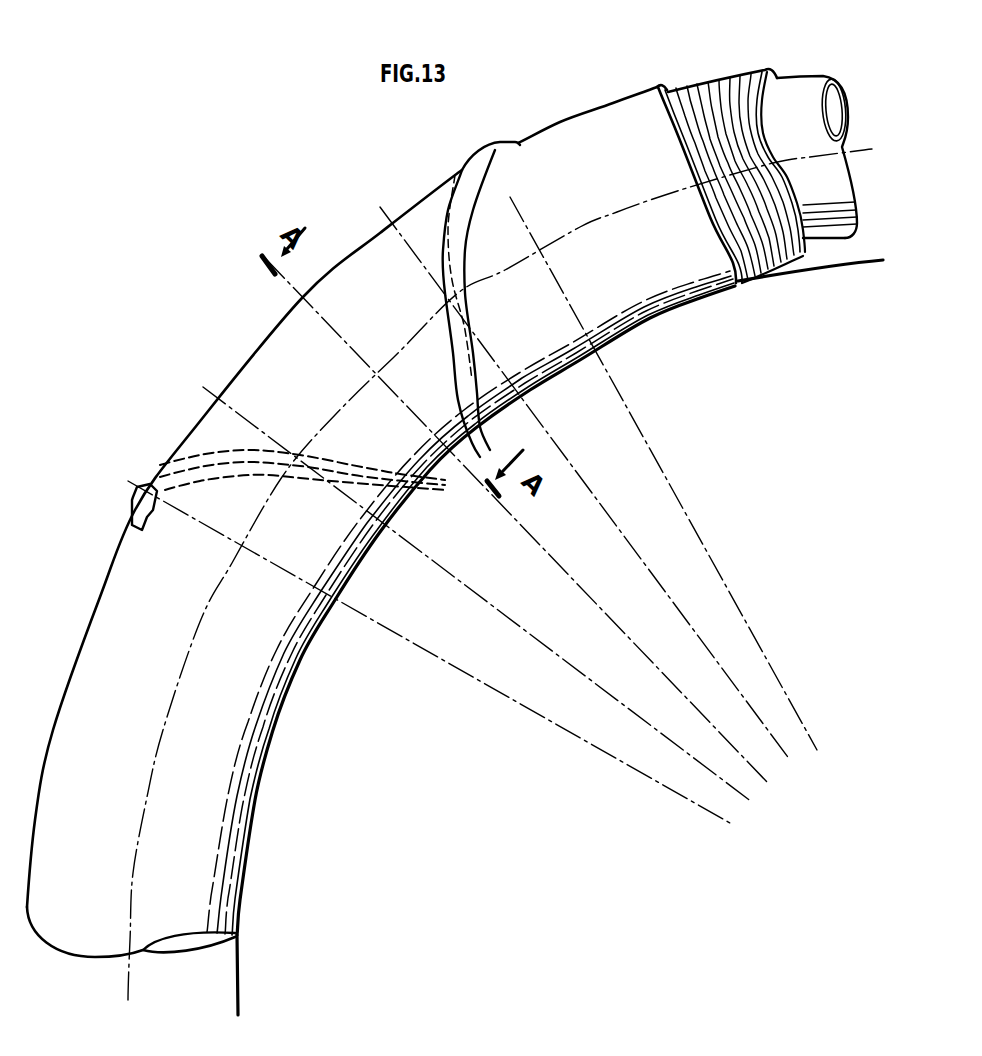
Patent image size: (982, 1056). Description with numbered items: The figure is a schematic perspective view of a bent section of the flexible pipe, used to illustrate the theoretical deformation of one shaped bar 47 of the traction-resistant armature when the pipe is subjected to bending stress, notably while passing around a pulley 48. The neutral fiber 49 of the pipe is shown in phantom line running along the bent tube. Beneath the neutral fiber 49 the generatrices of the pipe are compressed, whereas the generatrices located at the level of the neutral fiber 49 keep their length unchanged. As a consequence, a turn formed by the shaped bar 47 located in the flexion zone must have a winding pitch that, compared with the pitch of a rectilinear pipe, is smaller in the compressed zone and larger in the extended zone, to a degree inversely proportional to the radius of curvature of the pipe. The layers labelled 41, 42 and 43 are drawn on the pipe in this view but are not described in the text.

The inner tube 41 is at (787, 100).
The spirally wound reinforcement layer 42 is at (702, 100).
The outer cover layer 43 is at (640, 110).
The shaped bar 47 is at (477, 152).
The pulley 48 is at (230, 984).
The neutral fiber 49 is at (119, 986).